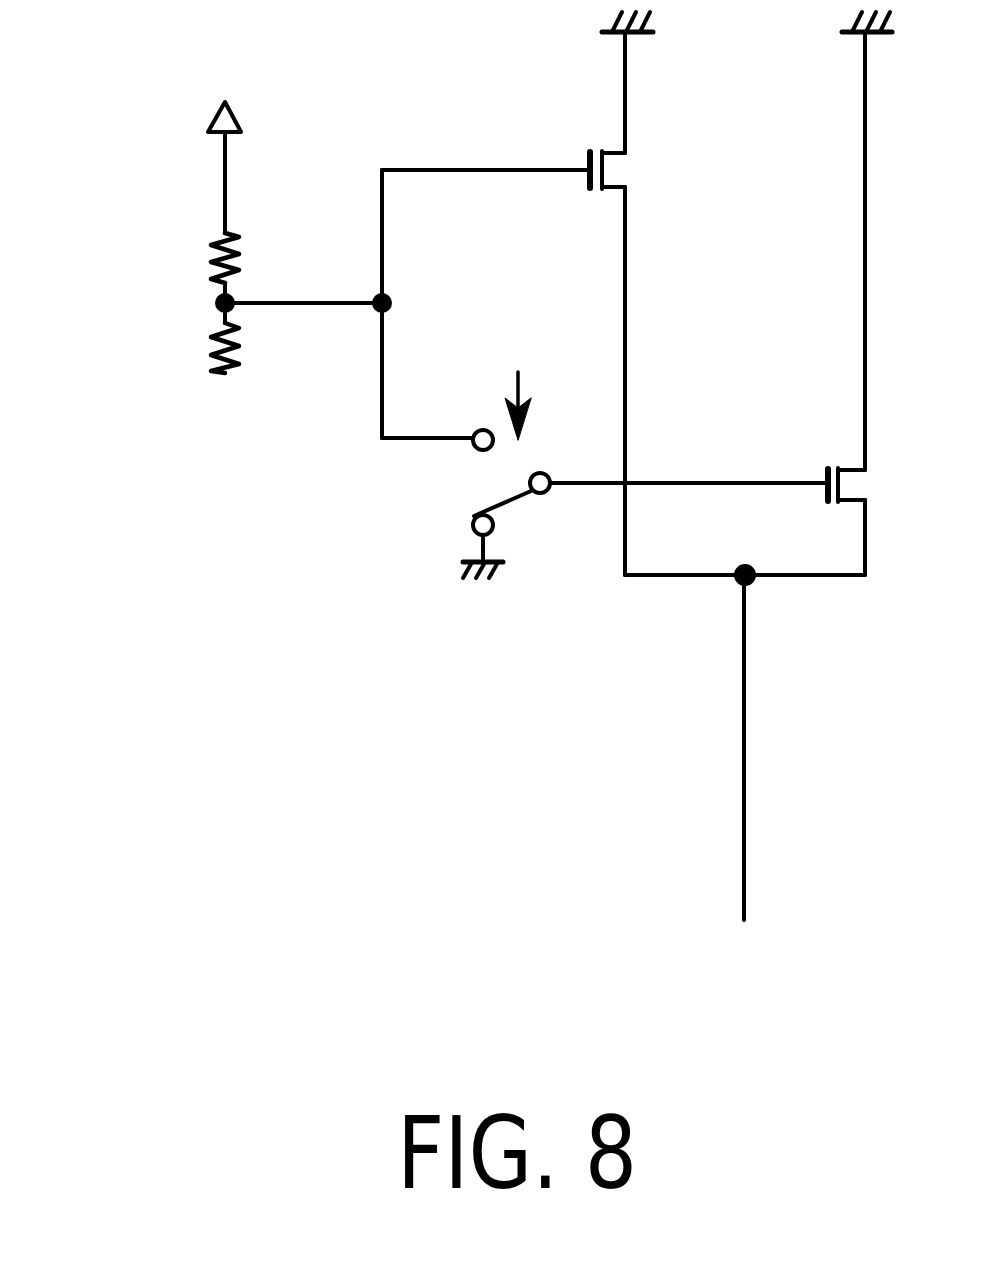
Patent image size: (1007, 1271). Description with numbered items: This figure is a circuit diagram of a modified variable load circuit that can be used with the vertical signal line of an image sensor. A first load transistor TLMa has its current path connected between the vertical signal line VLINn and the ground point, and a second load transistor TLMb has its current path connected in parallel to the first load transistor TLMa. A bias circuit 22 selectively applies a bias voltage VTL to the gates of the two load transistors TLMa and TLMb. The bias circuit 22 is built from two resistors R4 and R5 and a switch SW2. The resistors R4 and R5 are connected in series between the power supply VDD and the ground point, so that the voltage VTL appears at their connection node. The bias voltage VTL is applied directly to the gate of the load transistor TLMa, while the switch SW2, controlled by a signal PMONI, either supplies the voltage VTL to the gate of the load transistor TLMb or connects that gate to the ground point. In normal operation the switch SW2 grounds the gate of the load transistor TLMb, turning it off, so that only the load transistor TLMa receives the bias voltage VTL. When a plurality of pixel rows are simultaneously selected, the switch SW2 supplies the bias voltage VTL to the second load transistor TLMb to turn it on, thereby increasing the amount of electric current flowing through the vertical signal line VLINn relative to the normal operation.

The bias circuit 22 is at (152, 124).
The resistor R4 is at (213, 240).
The resistor R5 is at (205, 342).
The power supply VDD is at (222, 131).
The bias voltage VTL is at (403, 304).
The first load transistor TLMa is at (592, 143).
The second load transistor TLMb is at (833, 455).
The signal PMONI is at (518, 375).
The switch SW2 is at (456, 471).
The vertical signal line VLINn is at (745, 781).